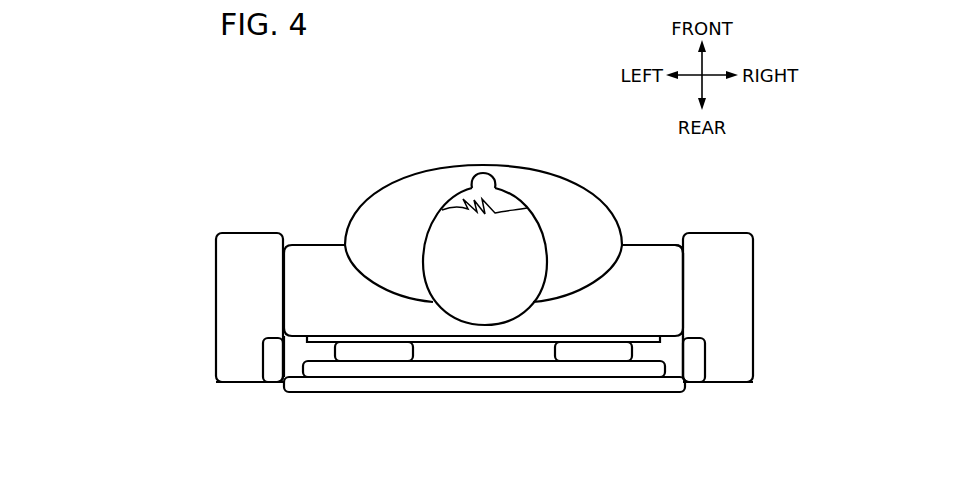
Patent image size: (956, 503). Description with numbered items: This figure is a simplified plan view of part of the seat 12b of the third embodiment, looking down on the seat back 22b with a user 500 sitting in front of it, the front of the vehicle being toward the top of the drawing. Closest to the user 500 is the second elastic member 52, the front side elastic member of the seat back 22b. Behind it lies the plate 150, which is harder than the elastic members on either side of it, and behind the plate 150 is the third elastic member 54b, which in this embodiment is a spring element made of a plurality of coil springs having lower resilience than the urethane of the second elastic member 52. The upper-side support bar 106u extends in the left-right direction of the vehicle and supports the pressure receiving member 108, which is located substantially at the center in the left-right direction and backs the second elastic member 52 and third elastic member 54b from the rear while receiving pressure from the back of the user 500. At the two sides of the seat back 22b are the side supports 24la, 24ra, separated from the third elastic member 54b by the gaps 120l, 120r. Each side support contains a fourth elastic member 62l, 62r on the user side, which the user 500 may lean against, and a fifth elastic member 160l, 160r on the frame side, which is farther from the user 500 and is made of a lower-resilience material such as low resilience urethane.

The seat 12b is at (166, 162).
The seat back 22b is at (320, 244).
The user 500 is at (434, 178).
The second elastic member 52 is at (643, 252).
The fourth elastic member 62l is at (215, 298).
The fourth elastic member 62r is at (754, 306).
The fifth elastic member 160l is at (273, 360).
The fifth elastic member 160r is at (694, 358).
The side support 24la is at (233, 385).
The side support 24ra is at (742, 385).
The gap 120l is at (300, 350).
The gap 120r is at (670, 350).
The third elastic member 54b is at (372, 355).
The pressure receiving member 108 is at (438, 374).
The upper-side support bar 106u is at (477, 388).
The plate 150 is at (540, 345).